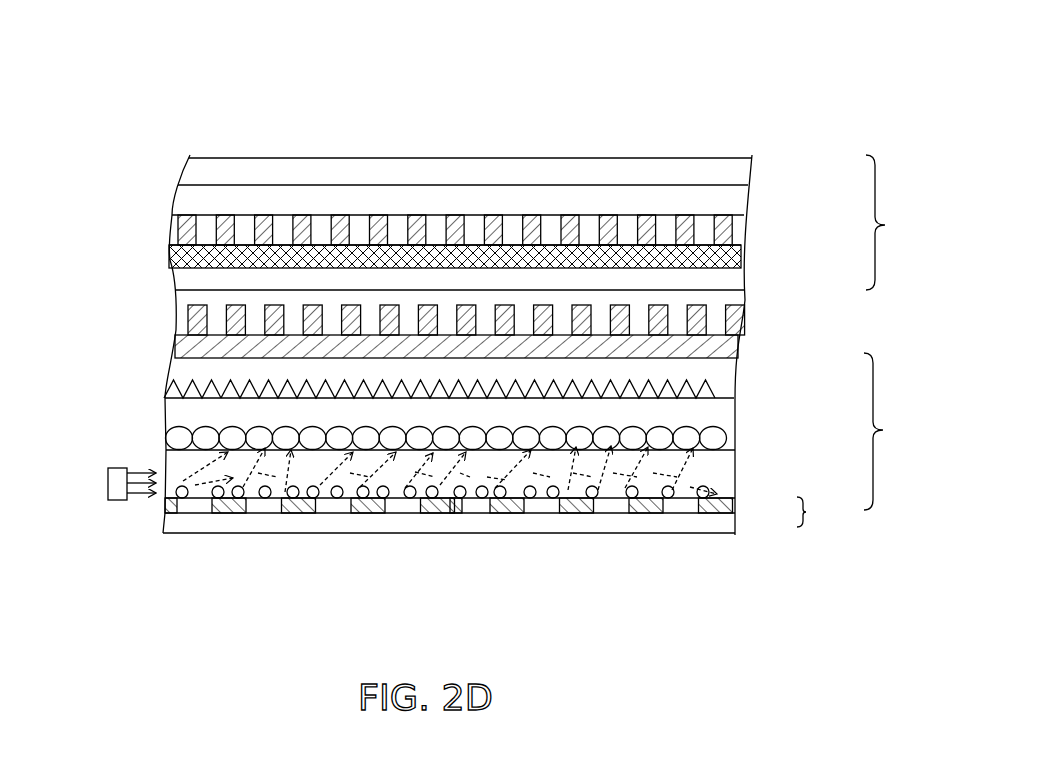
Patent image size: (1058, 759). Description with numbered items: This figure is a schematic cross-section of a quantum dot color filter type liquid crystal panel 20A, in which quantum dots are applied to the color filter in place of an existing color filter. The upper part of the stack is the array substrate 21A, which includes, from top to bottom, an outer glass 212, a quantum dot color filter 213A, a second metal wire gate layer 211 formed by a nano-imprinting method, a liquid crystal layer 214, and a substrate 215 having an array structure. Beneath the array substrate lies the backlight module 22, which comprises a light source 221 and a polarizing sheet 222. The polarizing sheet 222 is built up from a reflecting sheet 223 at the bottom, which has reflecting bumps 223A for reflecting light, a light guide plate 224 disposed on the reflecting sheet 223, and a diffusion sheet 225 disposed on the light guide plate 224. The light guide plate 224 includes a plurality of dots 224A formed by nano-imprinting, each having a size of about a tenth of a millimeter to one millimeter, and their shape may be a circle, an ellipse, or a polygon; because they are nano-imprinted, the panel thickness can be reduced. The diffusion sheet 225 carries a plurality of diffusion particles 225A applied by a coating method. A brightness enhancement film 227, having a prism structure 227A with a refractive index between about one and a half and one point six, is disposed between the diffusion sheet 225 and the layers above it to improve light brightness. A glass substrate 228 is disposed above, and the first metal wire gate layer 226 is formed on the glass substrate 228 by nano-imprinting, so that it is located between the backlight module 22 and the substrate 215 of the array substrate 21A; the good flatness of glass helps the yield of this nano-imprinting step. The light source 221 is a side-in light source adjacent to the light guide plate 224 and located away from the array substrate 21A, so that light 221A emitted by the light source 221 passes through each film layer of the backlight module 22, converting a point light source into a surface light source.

The quantum dot color filter type liquid crystal panel 20A is at (222, 128).
The outer glass 212 is at (742, 165).
The quantum dot color filter 213A is at (736, 200).
The second metal wire gate layer 211 is at (741, 229).
The liquid crystal layer 214 is at (741, 258).
The substrate having an array structure 215 is at (742, 283).
The array substrate 21A is at (898, 222).
The first metal wire gate layer 226 is at (740, 309).
The glass substrate 228 is at (736, 345).
The brightness enhancement film 227 is at (734, 371).
The prism structure 227A is at (162, 378).
The diffusion sheet 225 is at (734, 413).
The diffusion particles 225A is at (163, 432).
The light guide plate 224 is at (735, 462).
The dots 224A is at (457, 515).
The reflecting sheet 223 is at (508, 515).
The reflecting bumps 223A is at (577, 515).
The polarizing sheet 222 is at (896, 431).
The light source 221 is at (108, 493).
The light 221A is at (143, 494).
The backlight module 22 is at (110, 510).